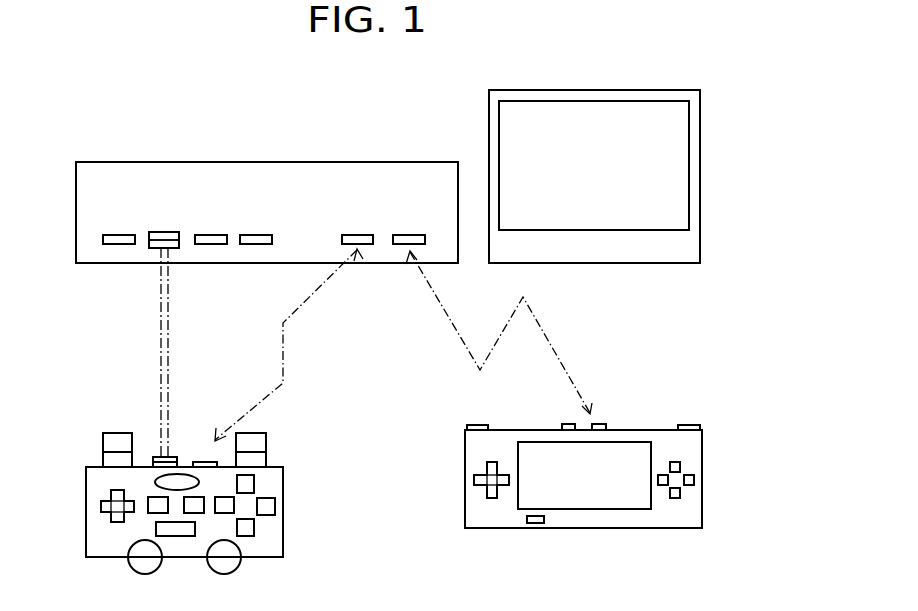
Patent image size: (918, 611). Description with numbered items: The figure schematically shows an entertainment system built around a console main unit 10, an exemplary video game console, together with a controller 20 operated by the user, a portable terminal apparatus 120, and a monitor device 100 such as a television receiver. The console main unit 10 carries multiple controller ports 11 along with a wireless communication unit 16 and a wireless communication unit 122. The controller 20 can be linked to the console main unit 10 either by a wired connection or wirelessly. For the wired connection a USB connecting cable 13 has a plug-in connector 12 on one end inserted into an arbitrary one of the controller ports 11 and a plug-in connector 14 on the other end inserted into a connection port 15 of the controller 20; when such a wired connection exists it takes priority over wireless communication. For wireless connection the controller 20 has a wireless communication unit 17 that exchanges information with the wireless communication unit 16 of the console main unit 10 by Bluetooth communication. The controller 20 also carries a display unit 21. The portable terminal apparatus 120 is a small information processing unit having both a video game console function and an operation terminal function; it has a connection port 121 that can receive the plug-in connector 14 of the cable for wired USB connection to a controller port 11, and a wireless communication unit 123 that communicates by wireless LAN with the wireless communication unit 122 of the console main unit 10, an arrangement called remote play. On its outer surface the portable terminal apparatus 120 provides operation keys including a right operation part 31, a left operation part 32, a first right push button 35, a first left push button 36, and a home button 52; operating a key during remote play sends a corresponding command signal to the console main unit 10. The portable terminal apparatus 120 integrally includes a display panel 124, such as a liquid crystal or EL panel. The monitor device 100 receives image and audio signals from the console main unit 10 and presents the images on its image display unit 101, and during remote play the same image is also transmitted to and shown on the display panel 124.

The console main unit 10 is at (307, 162).
The controller ports 11 is at (113, 235).
The plug-in connector 12 is at (157, 250).
The USB connecting cable 13 is at (161, 332).
The plug-in connector 14 is at (170, 457).
The connection port 15 is at (152, 462).
The wireless communication unit 16 is at (356, 235).
The wireless communication unit 17 is at (206, 462).
The controller 20 is at (283, 528).
The display unit 21 is at (155, 482).
The right operation part 31 is at (687, 500).
The left operation part 32 is at (480, 500).
The first right push button 35 is at (690, 424).
The first left push button 36 is at (478, 424).
The home button 52 is at (538, 525).
The monitor device 100 is at (700, 117).
The image display unit 101 is at (670, 160).
The portable terminal apparatus 120 is at (465, 448).
The connection port 121 is at (567, 424).
The wireless communication unit 122 is at (408, 235).
The wireless communication unit 123 is at (597, 424).
The display panel 124 is at (608, 500).